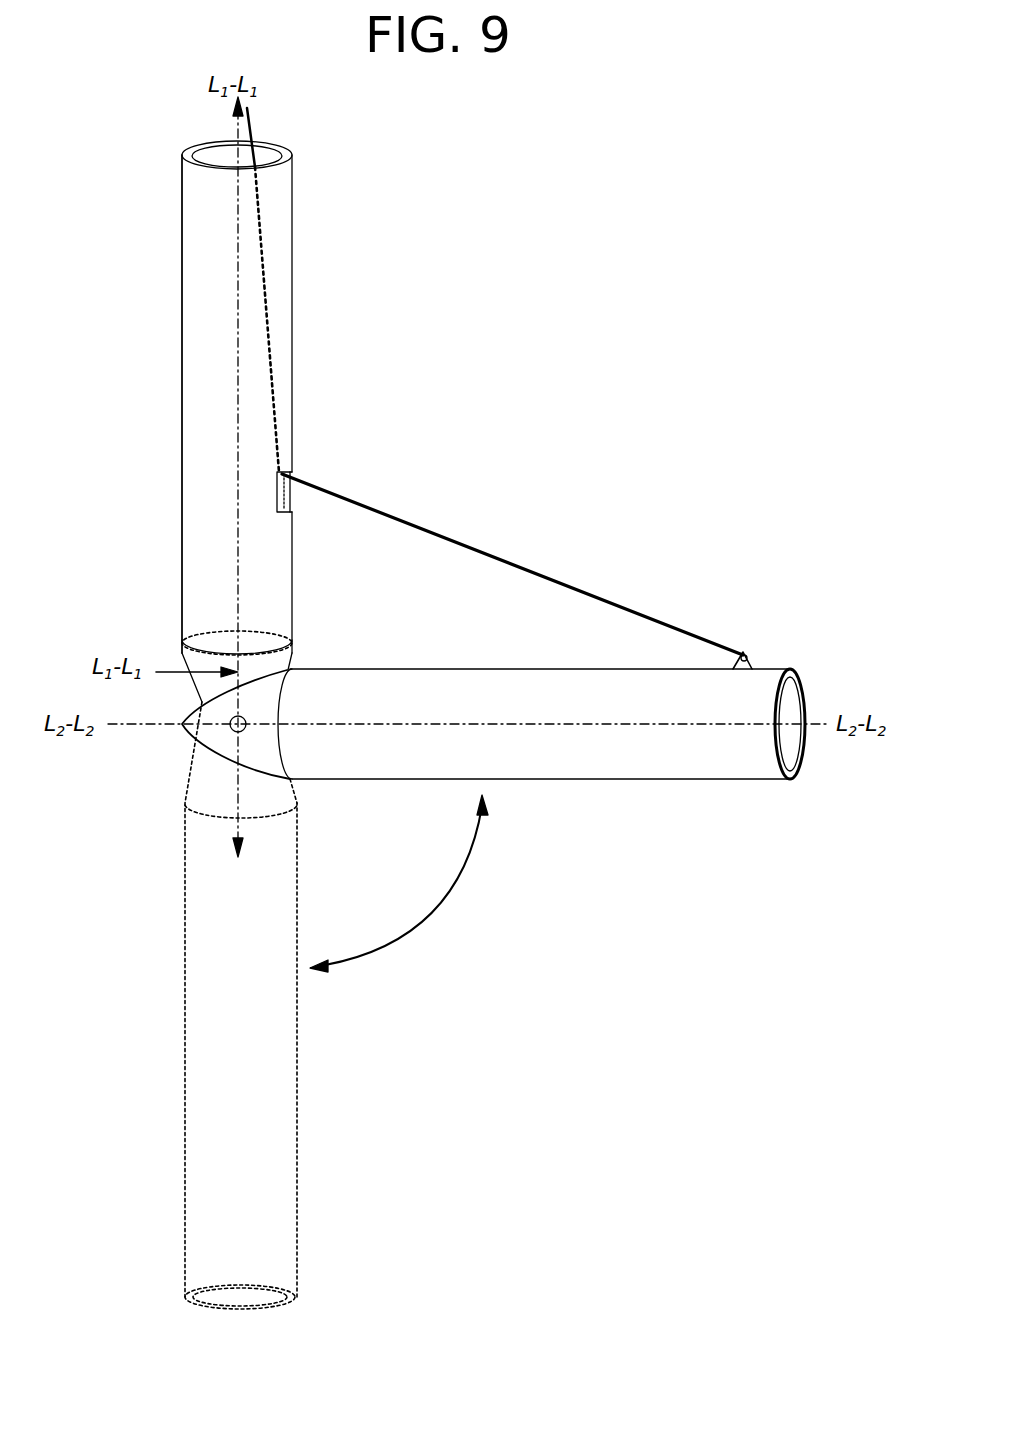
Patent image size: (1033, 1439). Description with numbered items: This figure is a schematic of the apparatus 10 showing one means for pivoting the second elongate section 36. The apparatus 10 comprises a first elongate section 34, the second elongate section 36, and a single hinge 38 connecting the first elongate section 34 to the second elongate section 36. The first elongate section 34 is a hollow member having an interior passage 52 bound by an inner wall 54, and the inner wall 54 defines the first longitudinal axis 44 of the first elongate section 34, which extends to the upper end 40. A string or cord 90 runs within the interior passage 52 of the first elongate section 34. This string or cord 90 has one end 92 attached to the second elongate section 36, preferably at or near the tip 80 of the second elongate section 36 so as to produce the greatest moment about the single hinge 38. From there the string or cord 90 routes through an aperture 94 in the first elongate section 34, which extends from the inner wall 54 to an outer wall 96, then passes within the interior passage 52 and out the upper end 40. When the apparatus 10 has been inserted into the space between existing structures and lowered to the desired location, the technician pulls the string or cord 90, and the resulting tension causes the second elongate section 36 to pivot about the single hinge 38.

The apparatus 10 is at (567, 230).
The first elongate section 34 is at (293, 282).
The second elongate section 36 is at (502, 669).
The single hinge 38 is at (231, 727).
The upper end 40 is at (181, 193).
The first longitudinal axis 44 is at (238, 380).
The interior passage 52 is at (213, 161).
The inner wall 54 is at (278, 150).
The tip 80 is at (790, 696).
The string or cord 90 is at (250, 125).
The end of string or cord 92 is at (745, 652).
The aperture 94 is at (295, 503).
The outer wall 96 is at (293, 462).